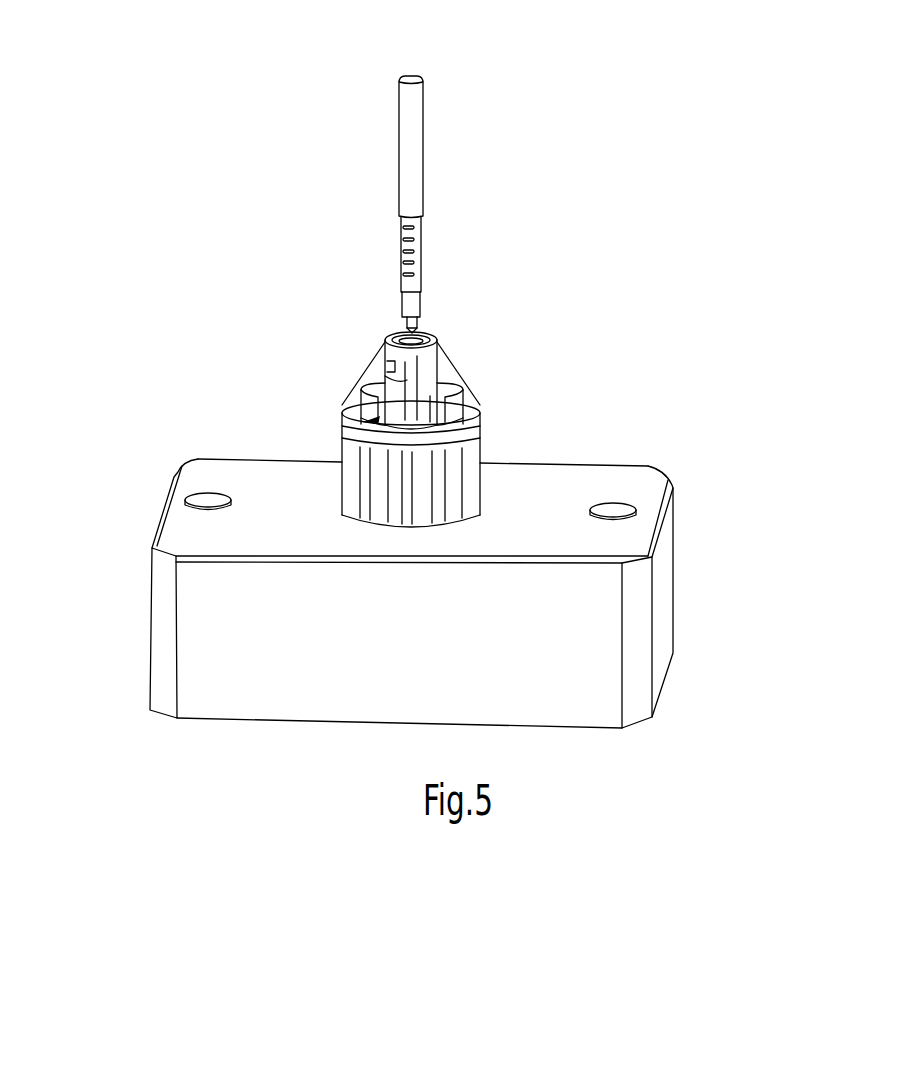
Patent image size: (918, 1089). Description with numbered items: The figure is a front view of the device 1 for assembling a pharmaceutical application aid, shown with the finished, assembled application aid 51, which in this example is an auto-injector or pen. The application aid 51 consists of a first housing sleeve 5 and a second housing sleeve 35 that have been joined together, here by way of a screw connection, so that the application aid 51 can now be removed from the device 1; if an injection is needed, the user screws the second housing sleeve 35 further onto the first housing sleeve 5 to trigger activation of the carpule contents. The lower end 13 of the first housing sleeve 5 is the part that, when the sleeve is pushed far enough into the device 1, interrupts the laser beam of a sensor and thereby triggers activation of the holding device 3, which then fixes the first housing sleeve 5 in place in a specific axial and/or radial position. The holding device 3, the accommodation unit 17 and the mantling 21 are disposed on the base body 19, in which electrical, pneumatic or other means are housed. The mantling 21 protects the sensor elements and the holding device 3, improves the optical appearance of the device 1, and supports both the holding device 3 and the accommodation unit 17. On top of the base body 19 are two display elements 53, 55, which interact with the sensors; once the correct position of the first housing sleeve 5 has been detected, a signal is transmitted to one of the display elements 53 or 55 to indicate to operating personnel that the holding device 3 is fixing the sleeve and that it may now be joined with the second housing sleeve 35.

The device 1 is at (150, 352).
The holding device 3 is at (342, 432).
The first housing sleeve 5 is at (423, 277).
The lower end 13 is at (415, 330).
The accommodation unit 17 is at (385, 376).
The base body 19 is at (280, 687).
The mantling 21 is at (445, 378).
The second housing sleeve 35 is at (413, 143).
The application aid 51 is at (360, 183).
The display element 53 is at (207, 500).
The display element 55 is at (618, 508).